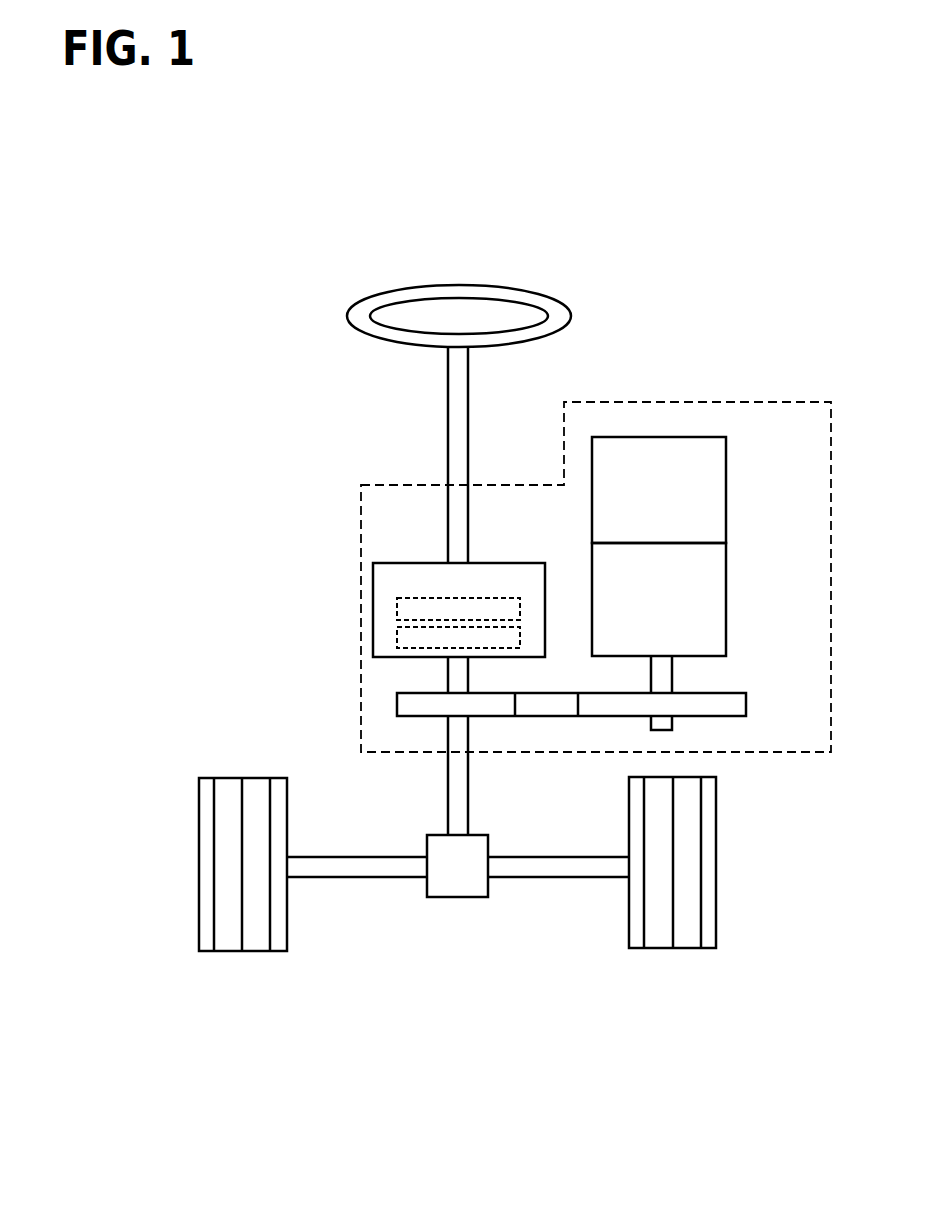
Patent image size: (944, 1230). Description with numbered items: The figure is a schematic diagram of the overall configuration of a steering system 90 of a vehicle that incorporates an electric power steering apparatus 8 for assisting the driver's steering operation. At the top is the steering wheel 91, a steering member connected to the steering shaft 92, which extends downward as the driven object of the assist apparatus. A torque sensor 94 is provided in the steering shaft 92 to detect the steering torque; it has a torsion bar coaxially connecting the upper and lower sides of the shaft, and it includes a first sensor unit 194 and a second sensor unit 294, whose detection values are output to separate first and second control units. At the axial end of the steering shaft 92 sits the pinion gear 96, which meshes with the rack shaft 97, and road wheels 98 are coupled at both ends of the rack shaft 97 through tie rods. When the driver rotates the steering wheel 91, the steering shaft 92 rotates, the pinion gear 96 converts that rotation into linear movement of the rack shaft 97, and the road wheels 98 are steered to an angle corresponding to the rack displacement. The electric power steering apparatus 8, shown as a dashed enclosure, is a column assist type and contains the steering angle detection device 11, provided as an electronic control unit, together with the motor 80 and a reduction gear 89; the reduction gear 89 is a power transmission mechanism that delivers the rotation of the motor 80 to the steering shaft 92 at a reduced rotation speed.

The electric power steering apparatus 8 is at (776, 400).
The steering angle detection device 11 is at (727, 466).
The motor 80 is at (727, 575).
The reduction gear 89 is at (747, 702).
The steering system 90 is at (424, 1050).
The steering wheel 91 is at (347, 317).
The steering shaft 92 is at (447, 405).
The torque sensor 94 is at (398, 562).
The first sensor unit 194 is at (397, 610).
The second sensor unit 294 is at (397, 645).
The pinion gear 96 is at (449, 898).
The rack shaft 97 is at (352, 878).
The road wheels 98 is at (258, 952).